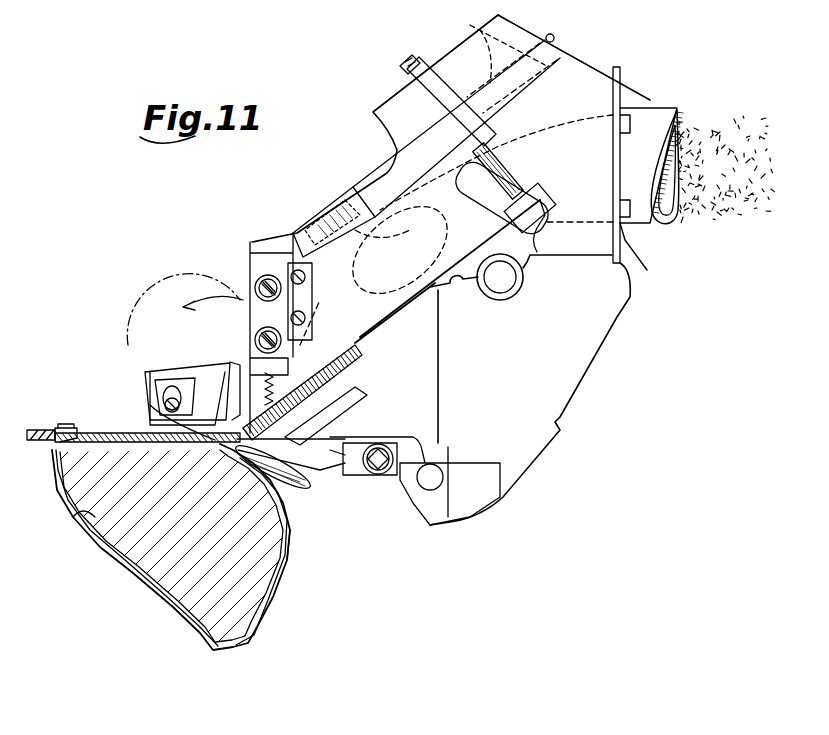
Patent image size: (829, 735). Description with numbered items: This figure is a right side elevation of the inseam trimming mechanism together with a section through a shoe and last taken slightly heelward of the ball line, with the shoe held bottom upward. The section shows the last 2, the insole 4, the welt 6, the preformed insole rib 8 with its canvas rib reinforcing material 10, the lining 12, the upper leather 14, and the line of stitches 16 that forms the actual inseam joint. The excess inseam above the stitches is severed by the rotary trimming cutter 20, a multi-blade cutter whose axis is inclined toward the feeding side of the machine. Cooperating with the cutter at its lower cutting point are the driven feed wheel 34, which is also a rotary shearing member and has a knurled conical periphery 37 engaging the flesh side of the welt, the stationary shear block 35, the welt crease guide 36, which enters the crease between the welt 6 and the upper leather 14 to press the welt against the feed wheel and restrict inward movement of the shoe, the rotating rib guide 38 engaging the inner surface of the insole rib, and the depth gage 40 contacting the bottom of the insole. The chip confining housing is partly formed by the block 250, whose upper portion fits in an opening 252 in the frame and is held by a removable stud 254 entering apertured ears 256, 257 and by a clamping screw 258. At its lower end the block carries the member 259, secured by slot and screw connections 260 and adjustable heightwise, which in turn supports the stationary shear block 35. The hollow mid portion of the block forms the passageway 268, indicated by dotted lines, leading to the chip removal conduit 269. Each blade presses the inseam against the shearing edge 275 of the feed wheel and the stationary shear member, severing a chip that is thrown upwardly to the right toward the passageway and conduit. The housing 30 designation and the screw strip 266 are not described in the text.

The last 2 is at (132, 543).
The insole 4 is at (55, 478).
The welt 6 is at (37, 430).
The preformed insole rib 8 is at (72, 430).
The canvas rib reinforcing material 10 is at (98, 433).
The lining 12 is at (80, 518).
The upper leather 14 is at (290, 545).
The line of stitches 16 is at (218, 450).
The rotary trimming cutter 20 is at (128, 320).
The housing 30 is at (538, 348).
The driven feed wheel 34 is at (362, 392).
The stationary shear block 35 is at (245, 405).
The welt crease guide 36 is at (305, 488).
The knurled conical periphery 37 is at (362, 368).
The rotating rib guide 38 is at (212, 425).
The depth gage 40 is at (150, 435).
The block 250 is at (420, 318).
The opening 252 is at (440, 100).
The removable stud 254 is at (497, 155).
The apertured ear 256 is at (451, 128).
The apertured ear 257 is at (535, 190).
The clamping screw 258 is at (509, 54).
The member 259 is at (300, 360).
The slot and screw connections 260 is at (268, 328).
The screw strip 266 is at (304, 266).
The passageway 268 is at (378, 249).
The chip removal conduit 269 is at (670, 112).
The shearing edge 275 is at (358, 343).